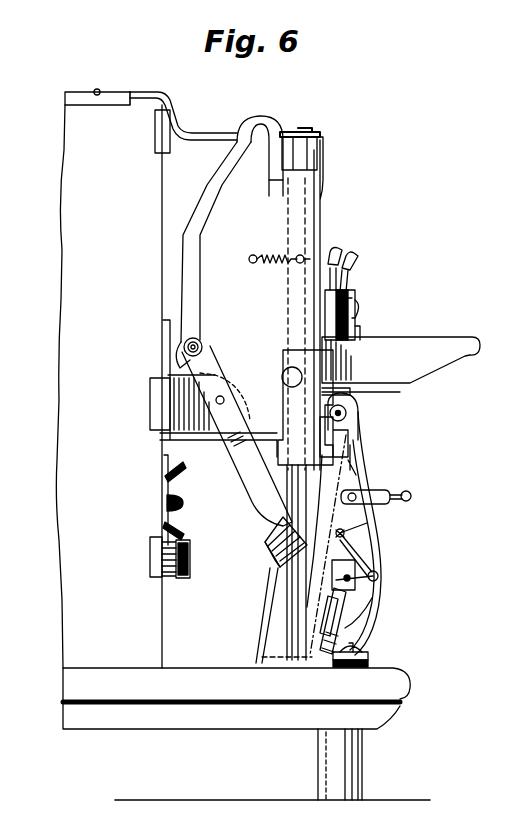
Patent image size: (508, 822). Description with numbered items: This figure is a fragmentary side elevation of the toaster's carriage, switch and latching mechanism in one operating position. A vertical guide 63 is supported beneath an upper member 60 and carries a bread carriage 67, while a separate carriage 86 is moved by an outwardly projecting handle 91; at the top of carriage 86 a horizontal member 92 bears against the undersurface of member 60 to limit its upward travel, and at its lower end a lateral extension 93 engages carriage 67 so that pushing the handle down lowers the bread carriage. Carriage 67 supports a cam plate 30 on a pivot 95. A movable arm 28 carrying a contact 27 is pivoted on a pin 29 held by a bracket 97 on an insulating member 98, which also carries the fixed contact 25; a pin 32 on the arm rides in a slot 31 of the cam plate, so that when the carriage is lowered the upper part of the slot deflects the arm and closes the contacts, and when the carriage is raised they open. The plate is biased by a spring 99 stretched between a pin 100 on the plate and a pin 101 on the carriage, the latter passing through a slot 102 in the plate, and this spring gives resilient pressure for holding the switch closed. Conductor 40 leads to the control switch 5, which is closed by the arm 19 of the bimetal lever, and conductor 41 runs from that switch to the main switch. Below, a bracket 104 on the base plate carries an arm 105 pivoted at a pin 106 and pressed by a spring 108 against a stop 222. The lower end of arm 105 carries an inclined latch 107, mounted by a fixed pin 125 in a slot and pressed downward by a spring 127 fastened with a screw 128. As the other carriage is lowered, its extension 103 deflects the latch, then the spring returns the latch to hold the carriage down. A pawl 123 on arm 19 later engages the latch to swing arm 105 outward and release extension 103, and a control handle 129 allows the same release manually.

The control switch 5 is at (357, 310).
The arm 19 is at (343, 612).
The contact 25 is at (186, 580).
The contact 27 is at (268, 556).
The movable arm 28 is at (246, 472).
The pin 29 is at (224, 396).
The cam plate 30 is at (266, 118).
The slot 31 is at (218, 178).
The pin 32 is at (203, 345).
The conductor 40 is at (334, 250).
The conductor 41 is at (352, 258).
The member 60 is at (219, 134).
The vertical guide 63 is at (305, 143).
The carriage 67 is at (323, 433).
The carriage 86 is at (326, 162).
The handle 91 is at (470, 342).
The horizontal member 92 is at (280, 162).
The lateral extension 93 is at (400, 392).
The pivot 95 is at (289, 367).
The bracket 97 is at (178, 478).
The insulating member 98 is at (164, 322).
The spring 99 is at (275, 266).
The pin 100 is at (252, 255).
The pin 101 is at (300, 254).
The slot 102 is at (304, 266).
The extension 103 is at (354, 468).
The bracket 104 is at (368, 654).
The arm 105 is at (358, 457).
The pin 106 is at (347, 413).
The inclined latch 107 is at (353, 620).
The spring 108 is at (378, 588).
The pawl 123 is at (358, 587).
The fixed pin 125 is at (300, 669).
The spring 127 is at (376, 568).
The screw 128 is at (345, 532).
The control handle 129 is at (410, 491).
The stop 222 is at (307, 567).